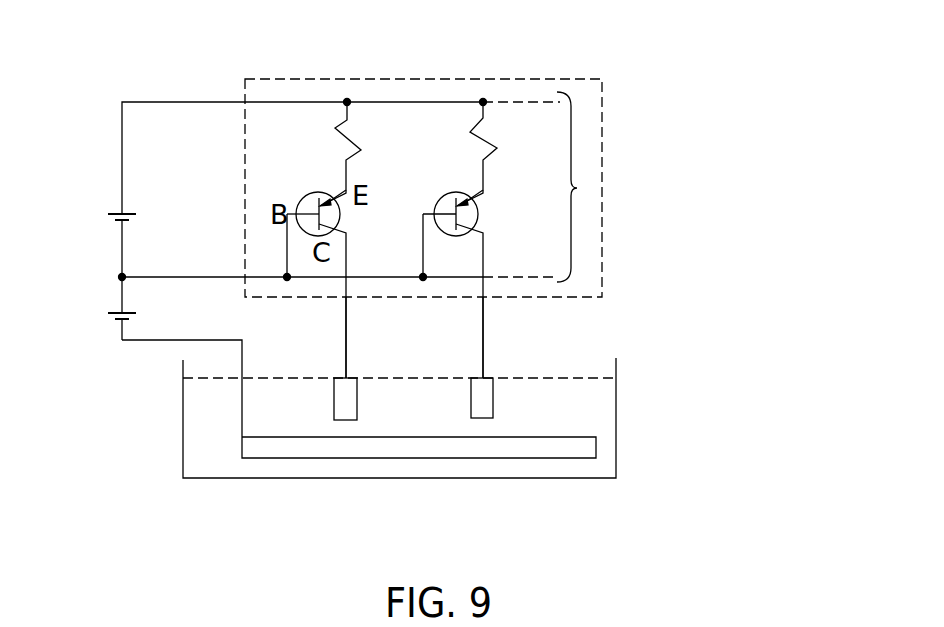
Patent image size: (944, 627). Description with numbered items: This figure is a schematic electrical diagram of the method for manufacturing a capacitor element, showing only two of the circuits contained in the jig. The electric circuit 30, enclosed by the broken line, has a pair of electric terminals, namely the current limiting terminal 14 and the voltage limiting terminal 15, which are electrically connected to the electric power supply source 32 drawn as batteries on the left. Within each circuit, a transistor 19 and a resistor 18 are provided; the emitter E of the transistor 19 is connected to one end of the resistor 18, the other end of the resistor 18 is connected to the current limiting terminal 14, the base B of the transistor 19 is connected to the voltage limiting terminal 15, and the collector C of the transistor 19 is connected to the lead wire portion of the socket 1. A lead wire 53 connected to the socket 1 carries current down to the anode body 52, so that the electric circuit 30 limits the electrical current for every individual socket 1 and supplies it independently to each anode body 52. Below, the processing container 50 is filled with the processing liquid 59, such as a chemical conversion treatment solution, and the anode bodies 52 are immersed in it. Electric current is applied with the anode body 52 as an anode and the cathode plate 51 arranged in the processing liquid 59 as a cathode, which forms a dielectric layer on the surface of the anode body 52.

The socket 1 is at (345, 298).
The current limiting terminal 14 is at (247, 102).
The voltage limiting terminal 15 is at (243, 274).
The resistor 18 is at (485, 138).
The transistor 19 is at (481, 218).
The electric circuit 30 is at (300, 101).
The electric power supply source 32 is at (119, 212).
The processing container 50 is at (183, 420).
The cathode plate 51 is at (433, 450).
The anode body 52 is at (345, 413).
The lead wire 53 is at (345, 340).
The processing liquid 59 is at (572, 408).